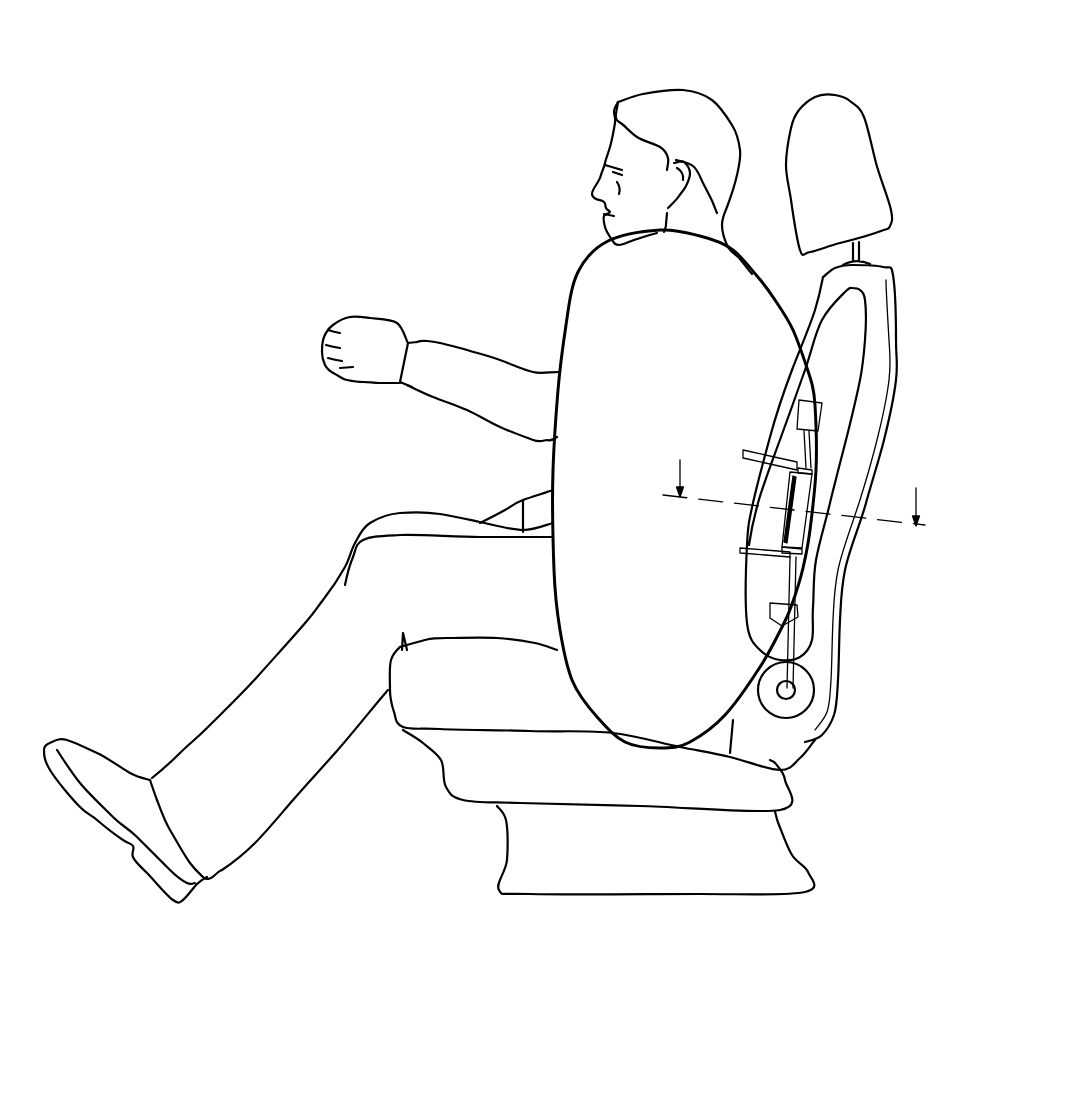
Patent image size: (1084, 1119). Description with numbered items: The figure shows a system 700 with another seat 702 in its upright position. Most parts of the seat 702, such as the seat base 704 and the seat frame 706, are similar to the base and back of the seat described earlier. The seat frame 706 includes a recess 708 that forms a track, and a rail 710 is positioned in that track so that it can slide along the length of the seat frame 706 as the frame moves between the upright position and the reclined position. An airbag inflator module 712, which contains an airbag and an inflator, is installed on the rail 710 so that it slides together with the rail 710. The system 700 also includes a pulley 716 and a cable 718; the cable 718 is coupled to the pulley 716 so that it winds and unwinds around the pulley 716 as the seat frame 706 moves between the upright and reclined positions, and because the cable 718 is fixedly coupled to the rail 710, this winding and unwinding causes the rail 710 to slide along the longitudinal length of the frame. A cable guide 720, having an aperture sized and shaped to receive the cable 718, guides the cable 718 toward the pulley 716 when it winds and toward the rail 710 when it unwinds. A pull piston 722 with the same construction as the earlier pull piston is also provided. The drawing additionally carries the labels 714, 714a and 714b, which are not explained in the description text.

The system 700 is at (247, 63).
The seat 702 is at (732, 63).
The seat base 704 is at (458, 800).
The seat frame 706 is at (882, 260).
The recess 708 is at (866, 345).
The rail 710 is at (813, 562).
The airbag inflator module 712 is at (806, 527).
The occupant limbs 714 is at (383, 262).
The occupant arm 714a is at (523, 363).
The occupant leg 714b is at (383, 517).
The pulley 716 is at (805, 720).
The cable 718 is at (810, 683).
The cable guide 720 is at (800, 613).
The pull piston 722 is at (823, 413).